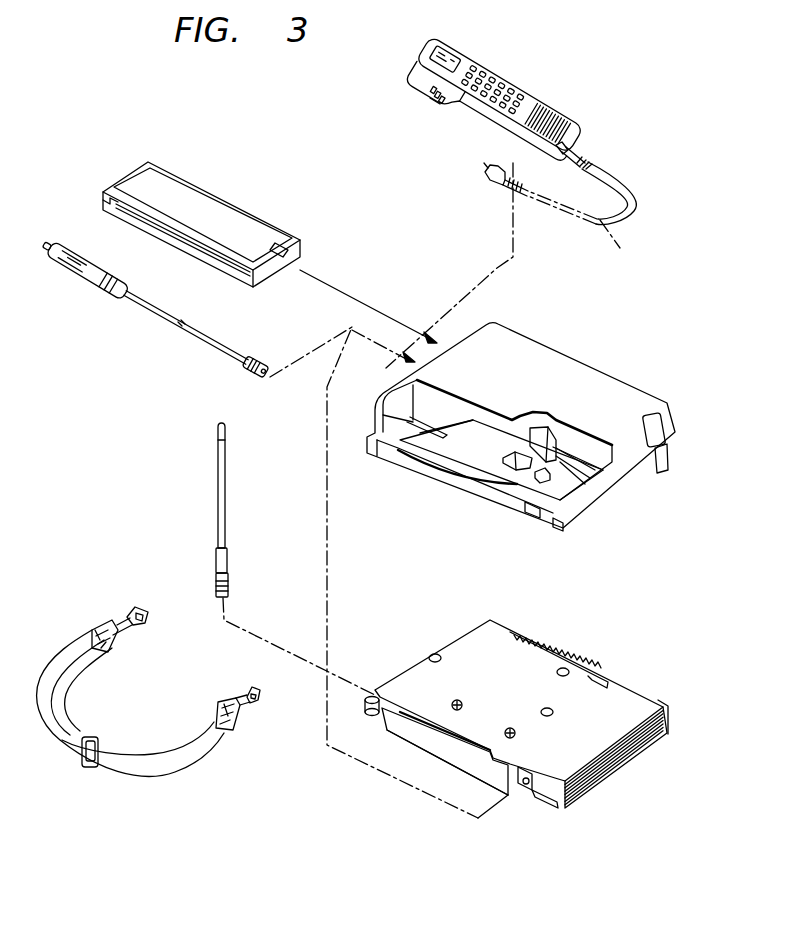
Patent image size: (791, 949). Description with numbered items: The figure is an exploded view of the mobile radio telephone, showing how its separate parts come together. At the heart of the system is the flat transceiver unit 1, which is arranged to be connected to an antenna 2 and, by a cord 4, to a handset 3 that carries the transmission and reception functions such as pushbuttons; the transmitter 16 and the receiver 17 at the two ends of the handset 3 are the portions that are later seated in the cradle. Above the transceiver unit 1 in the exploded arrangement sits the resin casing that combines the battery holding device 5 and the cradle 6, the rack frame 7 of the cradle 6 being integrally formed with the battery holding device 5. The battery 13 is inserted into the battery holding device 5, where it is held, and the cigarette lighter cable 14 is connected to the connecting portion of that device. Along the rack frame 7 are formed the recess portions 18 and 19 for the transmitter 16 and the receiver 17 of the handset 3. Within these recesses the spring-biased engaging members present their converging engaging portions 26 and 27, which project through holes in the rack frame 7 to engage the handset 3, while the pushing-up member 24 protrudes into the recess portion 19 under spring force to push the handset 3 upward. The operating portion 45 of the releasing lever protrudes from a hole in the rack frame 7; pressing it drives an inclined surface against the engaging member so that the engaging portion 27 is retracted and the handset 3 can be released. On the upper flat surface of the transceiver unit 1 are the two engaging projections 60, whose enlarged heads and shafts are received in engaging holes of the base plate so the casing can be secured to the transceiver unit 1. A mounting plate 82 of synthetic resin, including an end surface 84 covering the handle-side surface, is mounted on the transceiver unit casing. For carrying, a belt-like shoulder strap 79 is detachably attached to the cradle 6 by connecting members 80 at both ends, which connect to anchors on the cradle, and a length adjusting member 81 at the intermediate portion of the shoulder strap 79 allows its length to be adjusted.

The transceiver unit 1 is at (618, 770).
The antenna 2 is at (217, 480).
The handset 3 is at (462, 52).
The curled cord 4 is at (560, 206).
The battery holding device 5 is at (560, 353).
The cradle 6 is at (463, 460).
The rack frame 7 is at (487, 457).
The battery 13 is at (222, 197).
The cigarette lighter cable 14 is at (220, 338).
The transmitter 16 is at (432, 103).
The receiver 17 is at (551, 157).
The recess portion 18 is at (417, 438).
The recess portion 19 is at (555, 488).
The pushing-up member 24 is at (545, 483).
The engaging portion 26 is at (410, 420).
The engaging portion 27 is at (513, 467).
The operating portion 45 is at (548, 428).
The engaging projections 60 is at (455, 702).
The shoulder strap 79 is at (120, 767).
The connecting members 80 is at (133, 607).
The length adjusting member 81 is at (80, 757).
The mounting plate 82 is at (475, 783).
The end surface 84 is at (433, 750).